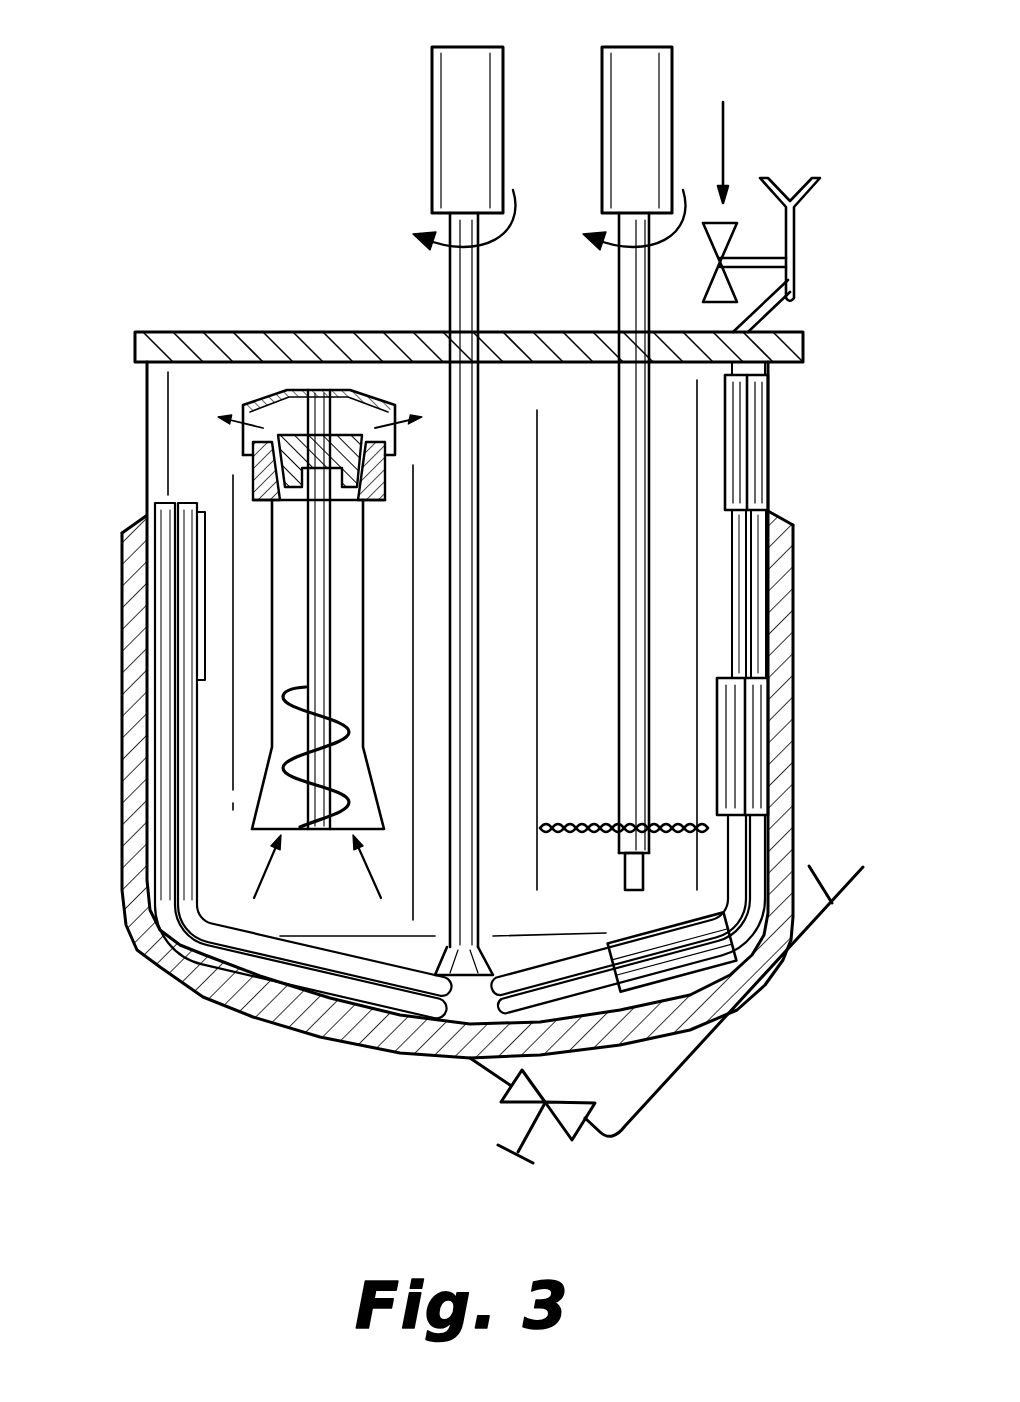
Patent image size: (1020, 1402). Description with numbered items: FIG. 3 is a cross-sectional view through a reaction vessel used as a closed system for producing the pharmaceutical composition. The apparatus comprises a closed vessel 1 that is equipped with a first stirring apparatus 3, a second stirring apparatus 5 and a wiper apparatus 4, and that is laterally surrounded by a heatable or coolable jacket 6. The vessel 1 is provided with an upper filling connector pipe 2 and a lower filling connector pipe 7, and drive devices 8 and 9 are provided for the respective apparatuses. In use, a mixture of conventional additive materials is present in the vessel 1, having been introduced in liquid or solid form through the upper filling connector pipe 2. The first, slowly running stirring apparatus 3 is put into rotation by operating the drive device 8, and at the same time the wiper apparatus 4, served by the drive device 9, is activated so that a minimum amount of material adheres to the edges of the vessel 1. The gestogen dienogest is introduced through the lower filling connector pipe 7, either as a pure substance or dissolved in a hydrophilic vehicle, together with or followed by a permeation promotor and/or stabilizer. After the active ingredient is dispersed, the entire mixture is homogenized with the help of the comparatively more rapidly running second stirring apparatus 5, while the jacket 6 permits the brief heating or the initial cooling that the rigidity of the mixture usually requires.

The closed vessel 1 is at (117, 348).
The upper filling connector pipe 2 is at (723, 105).
The first stirring apparatus 3 is at (627, 487).
The wiper apparatus 4 is at (758, 490).
The second stirring apparatus 5 is at (365, 673).
The heatable or coolable jacket 6 is at (122, 790).
The lower filling connector pipe 7 is at (840, 855).
The drive device 8 is at (602, 70).
The drive device 9 is at (432, 70).